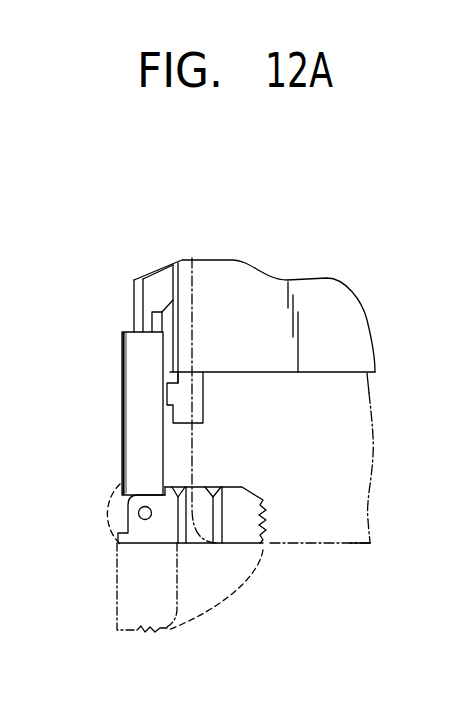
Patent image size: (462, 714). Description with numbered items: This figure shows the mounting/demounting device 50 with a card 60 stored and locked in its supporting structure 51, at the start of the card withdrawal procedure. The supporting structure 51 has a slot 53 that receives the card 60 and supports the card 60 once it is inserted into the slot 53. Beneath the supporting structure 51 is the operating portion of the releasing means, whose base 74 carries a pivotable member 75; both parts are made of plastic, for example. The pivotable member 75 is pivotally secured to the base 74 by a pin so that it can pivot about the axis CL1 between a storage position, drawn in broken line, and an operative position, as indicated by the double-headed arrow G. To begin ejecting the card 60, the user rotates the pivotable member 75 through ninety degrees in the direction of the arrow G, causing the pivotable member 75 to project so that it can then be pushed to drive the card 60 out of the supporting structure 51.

The mounting/demounting device 50 is at (321, 257).
The supporting structure 51 is at (238, 277).
The slot 53 is at (294, 569).
The card 60 is at (352, 545).
The base 74 is at (135, 407).
The pivotable member 75 is at (138, 632).
The axis CL1 is at (140, 513).
The double-headed arrow G is at (218, 558).